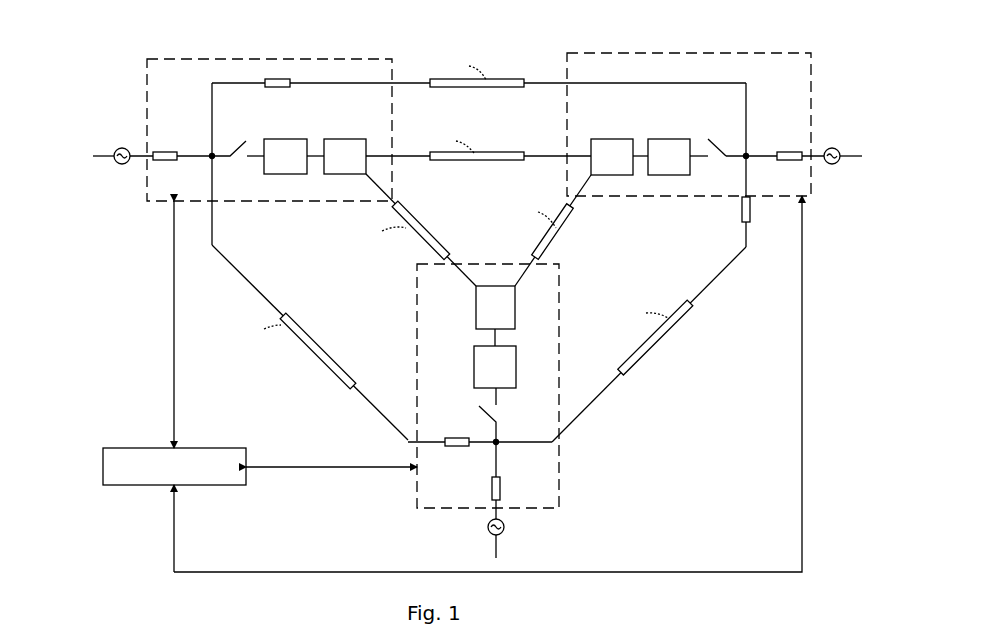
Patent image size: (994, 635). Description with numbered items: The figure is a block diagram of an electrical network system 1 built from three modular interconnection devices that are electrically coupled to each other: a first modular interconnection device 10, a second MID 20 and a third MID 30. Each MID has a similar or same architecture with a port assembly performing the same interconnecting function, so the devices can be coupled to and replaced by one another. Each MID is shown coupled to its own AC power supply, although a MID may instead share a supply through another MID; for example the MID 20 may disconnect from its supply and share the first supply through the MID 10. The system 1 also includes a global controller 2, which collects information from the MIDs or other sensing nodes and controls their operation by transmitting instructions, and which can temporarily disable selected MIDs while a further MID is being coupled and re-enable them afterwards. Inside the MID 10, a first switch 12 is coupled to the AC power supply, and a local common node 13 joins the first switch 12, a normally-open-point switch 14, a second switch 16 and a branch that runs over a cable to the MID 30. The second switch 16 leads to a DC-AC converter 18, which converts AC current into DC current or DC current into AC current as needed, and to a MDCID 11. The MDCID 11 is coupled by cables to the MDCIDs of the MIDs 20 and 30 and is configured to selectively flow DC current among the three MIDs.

The electrical network system 1 is at (92, 44).
The global controller 2 is at (103, 462).
The first modular interconnection device 10 is at (186, 62).
The MDCID 11 is at (355, 138).
The first switch 12 is at (172, 150).
The local common node 13 is at (208, 160).
The normally-open-point switch 14 is at (274, 80).
The second switch 16 is at (240, 141).
The DC-AC converter 18 is at (291, 138).
The second modular interconnection device 20 is at (618, 57).
The third modular interconnection device 30 is at (422, 498).